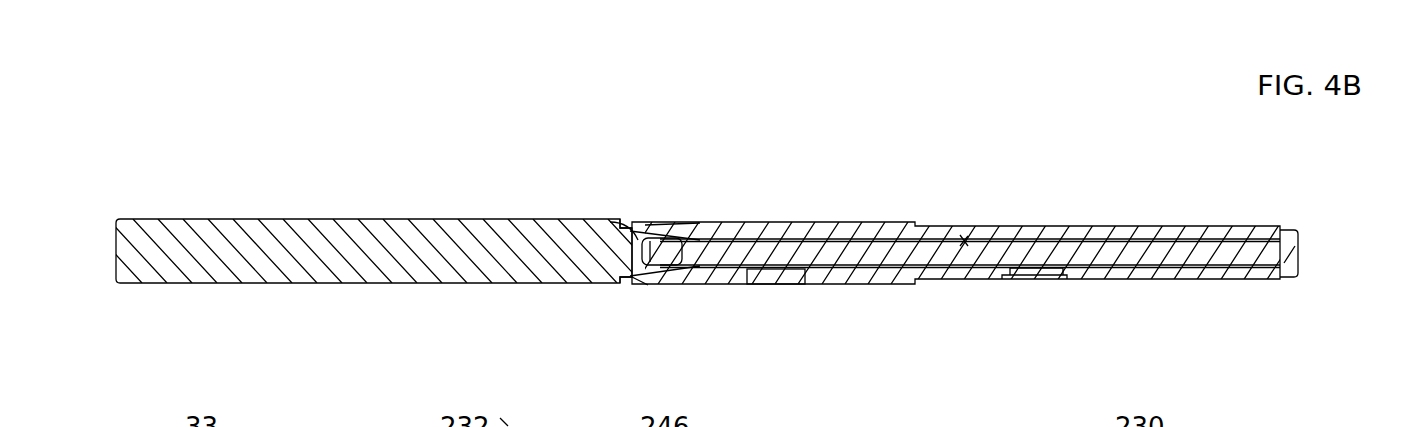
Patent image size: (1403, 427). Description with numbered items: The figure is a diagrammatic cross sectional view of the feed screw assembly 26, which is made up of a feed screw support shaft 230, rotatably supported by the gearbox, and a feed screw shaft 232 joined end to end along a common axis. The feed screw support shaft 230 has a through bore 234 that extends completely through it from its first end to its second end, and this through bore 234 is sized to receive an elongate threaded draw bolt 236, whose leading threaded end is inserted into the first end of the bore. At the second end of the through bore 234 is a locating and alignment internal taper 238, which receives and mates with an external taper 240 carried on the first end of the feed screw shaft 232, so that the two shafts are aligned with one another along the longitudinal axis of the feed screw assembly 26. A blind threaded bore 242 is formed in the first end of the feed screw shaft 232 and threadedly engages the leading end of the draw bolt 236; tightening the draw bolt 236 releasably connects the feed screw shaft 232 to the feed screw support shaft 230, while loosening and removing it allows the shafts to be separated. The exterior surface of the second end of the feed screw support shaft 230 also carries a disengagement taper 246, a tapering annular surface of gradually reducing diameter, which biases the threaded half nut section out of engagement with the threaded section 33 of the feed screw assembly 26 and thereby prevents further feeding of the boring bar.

The feed screw assembly 26 is at (1184, 70).
The threaded section 33 is at (208, 284).
The feed screw shaft 232 is at (368, 327).
The internal taper 238 is at (597, 220).
The disengagement taper 246 is at (646, 250).
The blind threaded bore 242 is at (645, 250).
The external taper 240 is at (663, 262).
The through bore 234 is at (1208, 244).
The draw bolt 236 is at (1298, 257).
The feed screw support shaft 230 is at (1166, 280).